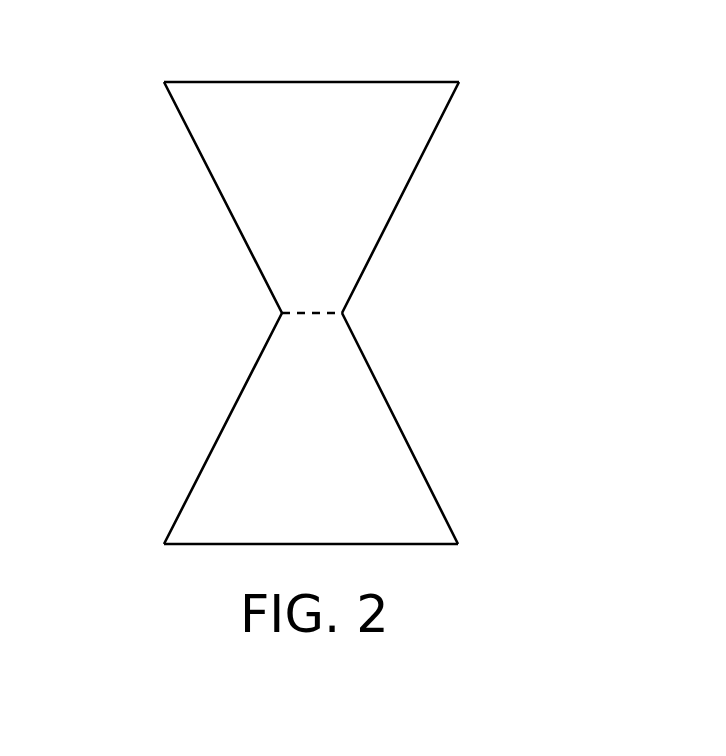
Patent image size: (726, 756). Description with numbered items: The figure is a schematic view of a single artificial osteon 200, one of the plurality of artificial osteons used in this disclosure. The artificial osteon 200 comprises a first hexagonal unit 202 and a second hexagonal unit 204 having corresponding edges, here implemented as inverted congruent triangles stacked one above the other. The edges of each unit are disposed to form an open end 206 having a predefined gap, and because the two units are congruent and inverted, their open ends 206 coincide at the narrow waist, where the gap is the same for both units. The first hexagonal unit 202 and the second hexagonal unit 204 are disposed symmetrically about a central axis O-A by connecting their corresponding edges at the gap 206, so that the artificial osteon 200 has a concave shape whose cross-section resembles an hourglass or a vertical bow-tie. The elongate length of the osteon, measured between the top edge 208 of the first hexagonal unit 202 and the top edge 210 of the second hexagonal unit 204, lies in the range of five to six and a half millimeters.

The artificial osteon 200 is at (489, 66).
The first hexagonal unit 202 is at (270, 220).
The second hexagonal unit 204 is at (340, 435).
The open end 206 is at (309, 311).
The top edge of the first hexagonal unit 208 is at (343, 82).
The top edge of the second hexagonal unit 210 is at (287, 543).